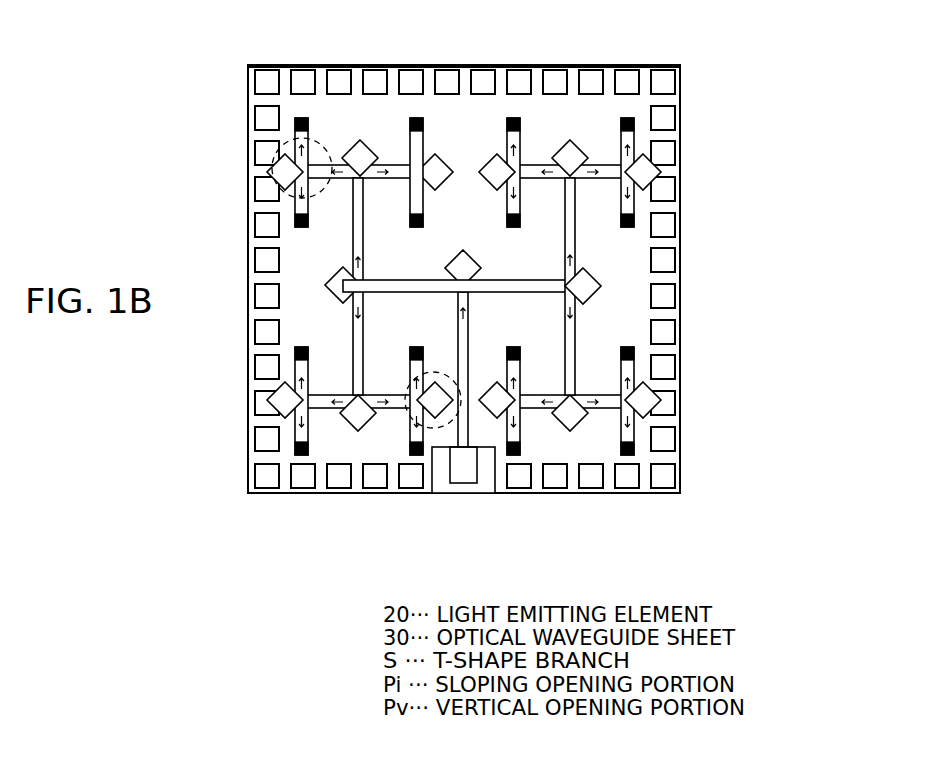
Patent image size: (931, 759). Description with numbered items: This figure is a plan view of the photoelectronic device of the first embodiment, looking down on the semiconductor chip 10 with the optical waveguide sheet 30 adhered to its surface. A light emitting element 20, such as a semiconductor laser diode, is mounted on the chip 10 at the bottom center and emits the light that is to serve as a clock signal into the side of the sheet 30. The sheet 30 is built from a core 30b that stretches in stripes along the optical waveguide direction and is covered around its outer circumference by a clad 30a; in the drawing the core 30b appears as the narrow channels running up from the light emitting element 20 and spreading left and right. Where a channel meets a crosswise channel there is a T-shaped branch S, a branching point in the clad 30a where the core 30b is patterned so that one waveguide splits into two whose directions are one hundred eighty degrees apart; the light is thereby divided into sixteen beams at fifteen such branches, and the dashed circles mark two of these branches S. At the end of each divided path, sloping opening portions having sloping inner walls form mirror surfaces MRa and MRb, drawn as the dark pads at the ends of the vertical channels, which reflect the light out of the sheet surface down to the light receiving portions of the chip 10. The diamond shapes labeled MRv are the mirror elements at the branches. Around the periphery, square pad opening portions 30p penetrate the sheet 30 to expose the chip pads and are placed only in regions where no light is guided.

The semiconductor chip 10 is at (465, 334).
The light emitting element 20 is at (463, 463).
The optical waveguide sheet 30 is at (783, 198).
The clad 30a is at (612, 277).
The core 30b is at (570, 331).
The pad opening portion 30p is at (664, 82).
The mirror surface MRa is at (418, 118).
The mirror surface MRb is at (425, 217).
The vertical mirror MRv is at (283, 172).
The T-shaped branch S is at (278, 138).